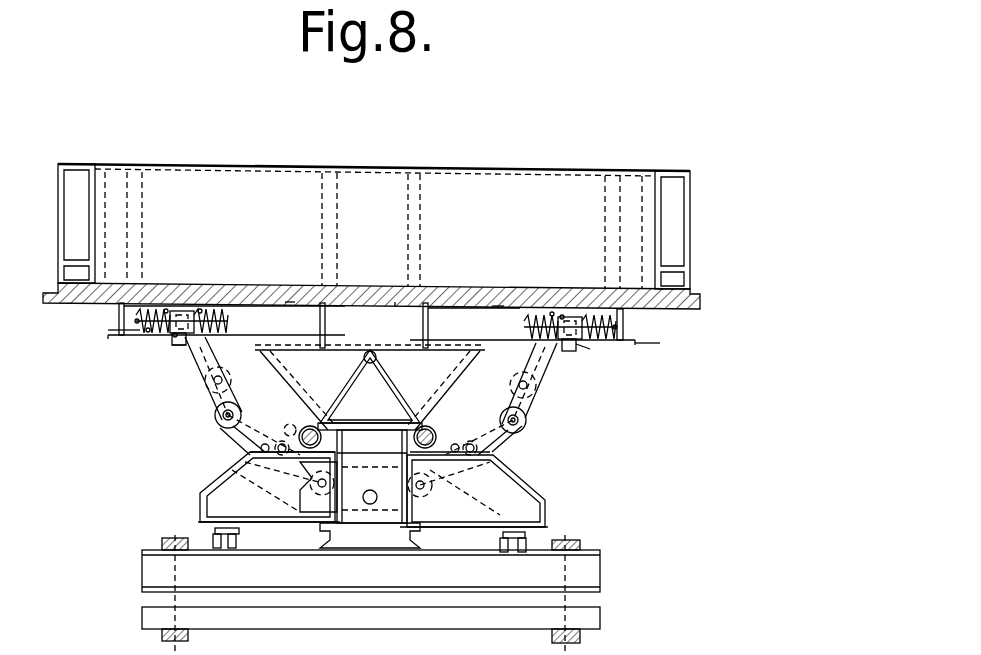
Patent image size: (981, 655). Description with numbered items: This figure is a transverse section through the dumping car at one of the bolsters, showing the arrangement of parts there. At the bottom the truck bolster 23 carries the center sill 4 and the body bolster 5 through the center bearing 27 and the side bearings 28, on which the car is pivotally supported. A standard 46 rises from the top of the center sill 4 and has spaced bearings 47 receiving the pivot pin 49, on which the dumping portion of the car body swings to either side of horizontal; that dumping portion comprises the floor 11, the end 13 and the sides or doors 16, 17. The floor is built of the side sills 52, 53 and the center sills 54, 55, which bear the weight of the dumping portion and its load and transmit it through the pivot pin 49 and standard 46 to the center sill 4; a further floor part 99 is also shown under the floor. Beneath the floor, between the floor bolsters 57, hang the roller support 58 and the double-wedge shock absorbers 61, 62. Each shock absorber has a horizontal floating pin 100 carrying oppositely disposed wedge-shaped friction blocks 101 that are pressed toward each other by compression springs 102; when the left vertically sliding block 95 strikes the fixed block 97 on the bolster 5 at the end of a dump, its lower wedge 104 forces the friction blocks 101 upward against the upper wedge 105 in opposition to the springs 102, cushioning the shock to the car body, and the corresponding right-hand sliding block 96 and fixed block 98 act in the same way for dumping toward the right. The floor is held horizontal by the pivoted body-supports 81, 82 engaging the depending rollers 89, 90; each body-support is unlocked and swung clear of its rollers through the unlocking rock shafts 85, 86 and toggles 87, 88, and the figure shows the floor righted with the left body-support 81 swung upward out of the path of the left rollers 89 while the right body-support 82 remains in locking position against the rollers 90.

The center sill 4 is at (330, 491).
The bolster 5 is at (547, 502).
The floor 11 is at (450, 300).
The end 13 is at (518, 190).
The side 16 is at (66, 219).
The side 17 is at (666, 200).
The truck bolster 23 is at (588, 582).
The center bearing 27 is at (408, 550).
The side bearing 28 is at (212, 536).
The standard 46 is at (400, 386).
The bearing 47 is at (395, 302).
The pivot pin 49 is at (370, 364).
The side sill 52 is at (116, 338).
The side sill 53 is at (640, 343).
The center sill 54 is at (316, 320).
The center sill 55 is at (436, 320).
The floor bolster 57 is at (498, 314).
The roller support 58 is at (246, 302).
The shock absorber 61 is at (182, 308).
The shock absorber 62 is at (574, 313).
The body-support 81 is at (226, 433).
The body-support 82 is at (505, 446).
The unlocking rock shaft 85 is at (312, 428).
The unlocking rock shaft 86 is at (424, 428).
The toggle 87 is at (292, 425).
The toggle 88 is at (456, 443).
The depending roller 89 is at (224, 414).
The depending roller 90 is at (518, 420).
The sliding block 95 is at (176, 345).
The right stop 96 is at (578, 347).
The block 97 is at (212, 474).
The right housing 98 is at (528, 480).
The platform plate 99 is at (288, 302).
The floating pin 100 is at (130, 322).
The friction block 101 is at (200, 308).
The compression spring 102 is at (150, 330).
The lower wedge 104 is at (176, 336).
The upper wedge 105 is at (166, 308).